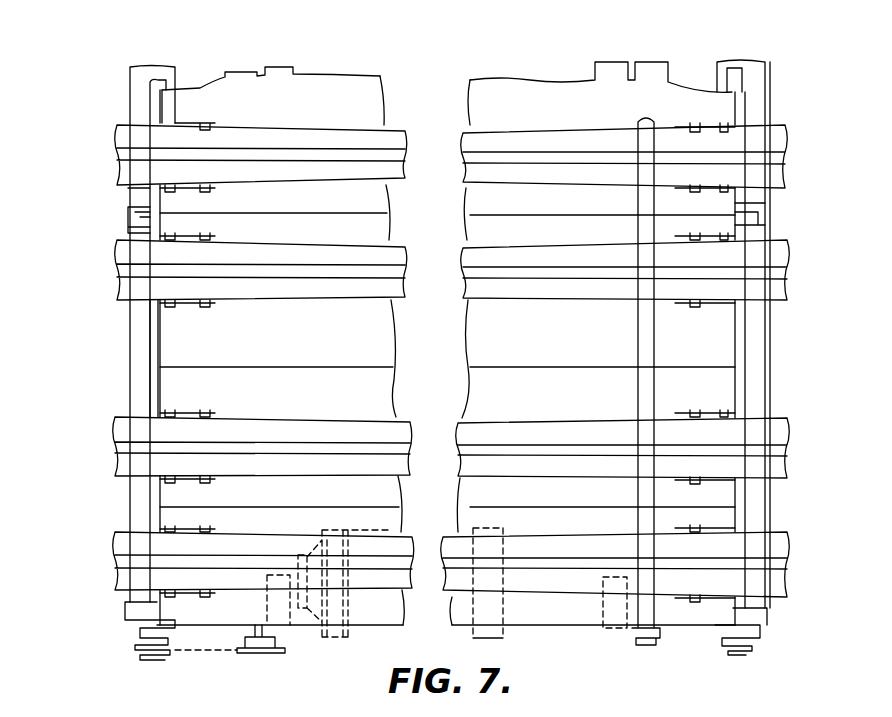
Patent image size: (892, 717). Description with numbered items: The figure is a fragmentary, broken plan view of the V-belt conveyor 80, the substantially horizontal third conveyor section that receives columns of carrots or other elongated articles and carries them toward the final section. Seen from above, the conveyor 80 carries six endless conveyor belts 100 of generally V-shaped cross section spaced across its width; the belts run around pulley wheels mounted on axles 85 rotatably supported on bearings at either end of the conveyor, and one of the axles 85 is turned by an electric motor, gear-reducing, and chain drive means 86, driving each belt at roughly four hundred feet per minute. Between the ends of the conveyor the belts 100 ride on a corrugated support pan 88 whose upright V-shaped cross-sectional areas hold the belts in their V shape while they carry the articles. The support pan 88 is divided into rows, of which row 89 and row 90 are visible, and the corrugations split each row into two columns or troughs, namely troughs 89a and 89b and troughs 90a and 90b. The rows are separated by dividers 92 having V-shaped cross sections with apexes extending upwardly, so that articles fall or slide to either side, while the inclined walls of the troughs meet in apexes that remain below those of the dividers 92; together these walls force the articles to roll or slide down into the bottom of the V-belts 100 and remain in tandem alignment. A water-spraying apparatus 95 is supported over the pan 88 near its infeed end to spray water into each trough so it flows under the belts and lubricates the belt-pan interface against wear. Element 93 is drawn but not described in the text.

The V-belt conveyor 80 is at (782, 67).
The axles 85 is at (135, 332).
The electric motor, gear-reducing, and chain drive means 86 is at (266, 656).
The corrugated support pan 88 is at (163, 389).
The row 89 is at (97, 600).
The column or trough 89a is at (615, 564).
The column or trough 89b is at (623, 448).
The row 90 is at (107, 302).
The column or trough 90a is at (625, 270).
The column or trough 90b is at (624, 156).
The dividers 92 is at (326, 398).
The right frame body 93 is at (598, 200).
The water-spraying apparatus 95 is at (632, 336).
The endless conveyor belts 100 is at (246, 241).